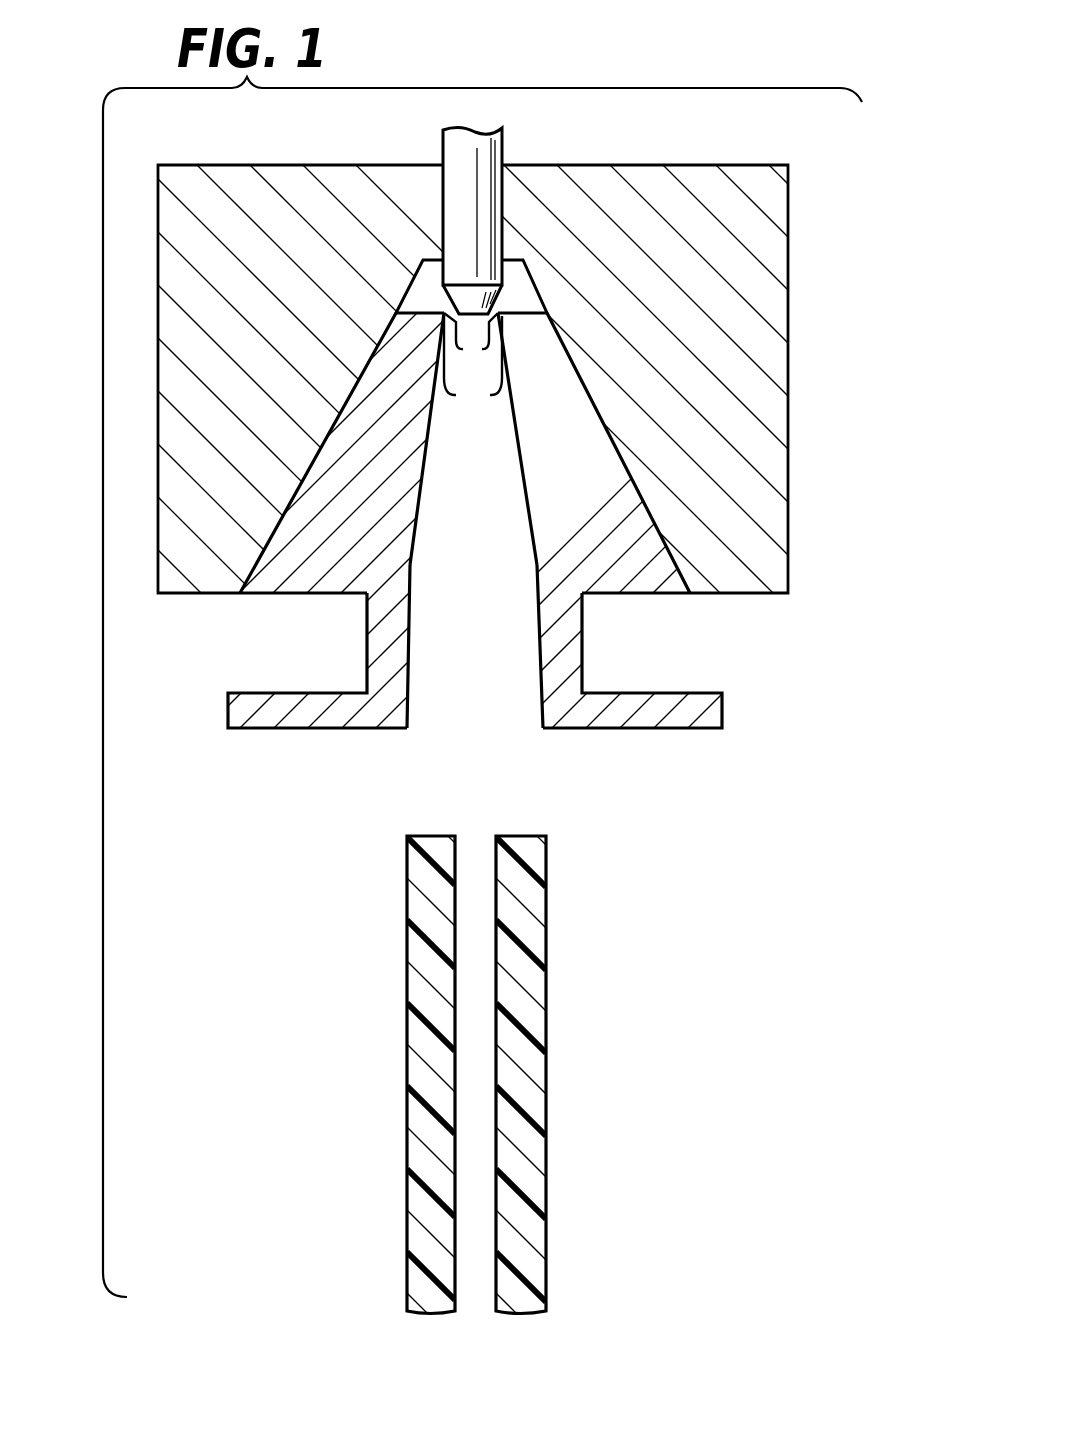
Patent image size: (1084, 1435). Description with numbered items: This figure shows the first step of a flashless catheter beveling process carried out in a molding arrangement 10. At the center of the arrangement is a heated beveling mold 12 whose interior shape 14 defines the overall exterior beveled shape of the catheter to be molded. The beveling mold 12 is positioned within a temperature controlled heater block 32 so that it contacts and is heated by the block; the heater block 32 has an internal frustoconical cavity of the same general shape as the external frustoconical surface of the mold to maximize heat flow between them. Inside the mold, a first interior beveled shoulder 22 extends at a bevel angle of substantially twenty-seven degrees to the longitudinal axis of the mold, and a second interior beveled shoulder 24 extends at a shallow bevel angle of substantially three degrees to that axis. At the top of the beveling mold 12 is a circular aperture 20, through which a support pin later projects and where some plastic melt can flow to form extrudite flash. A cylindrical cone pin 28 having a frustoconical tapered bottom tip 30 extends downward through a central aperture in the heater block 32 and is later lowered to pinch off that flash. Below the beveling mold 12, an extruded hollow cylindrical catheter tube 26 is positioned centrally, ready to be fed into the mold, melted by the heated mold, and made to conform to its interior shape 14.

The molding arrangement 10 is at (820, 305).
The beveling mold 12 is at (300, 593).
The interior shape 14 is at (524, 470).
The circular aperture 20 is at (471, 341).
The first interior beveled shoulder 22 is at (473, 363).
The second interior beveled shoulder 24 is at (534, 531).
The extruded polymeric tubing 26 is at (542, 990).
The cone pin 28 is at (487, 193).
The tapered bottom tip 30 is at (450, 301).
The temperature controlled heater block 32 is at (768, 224).